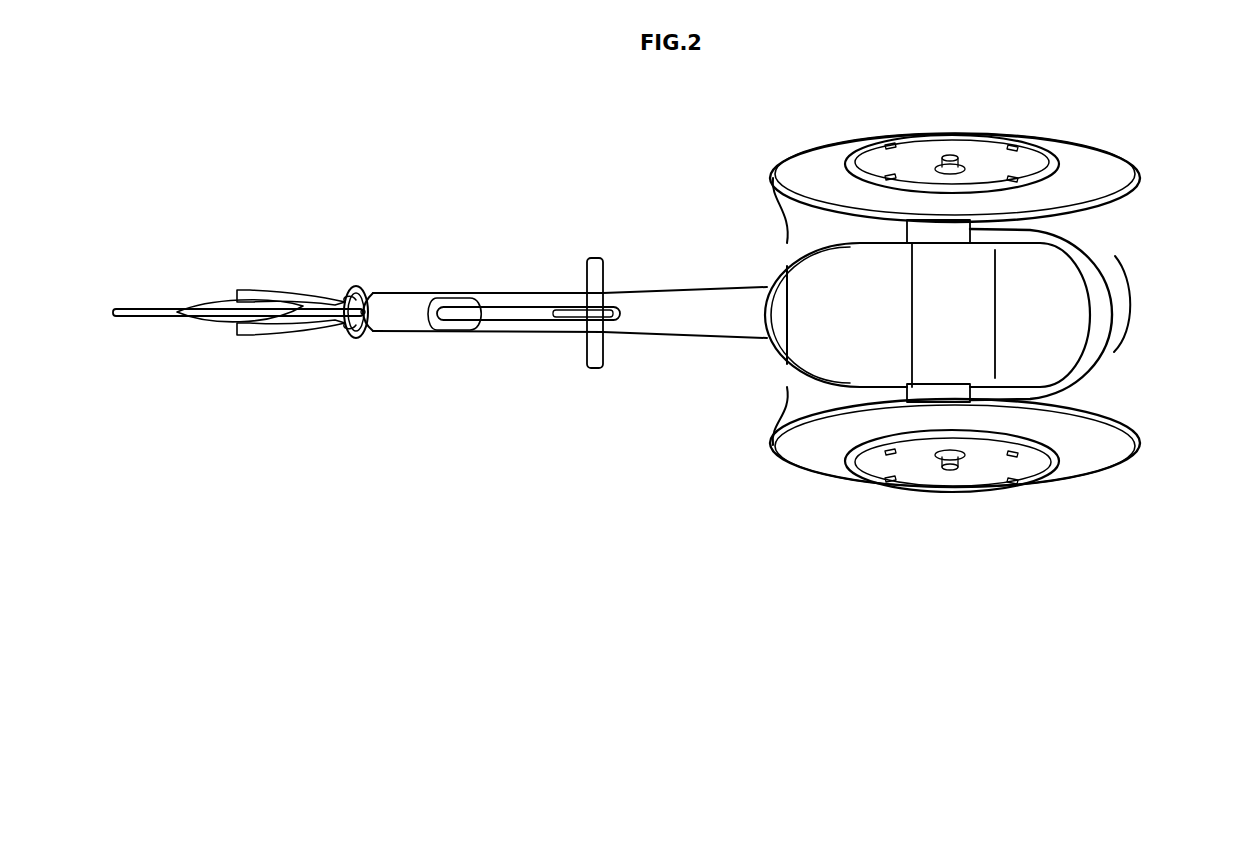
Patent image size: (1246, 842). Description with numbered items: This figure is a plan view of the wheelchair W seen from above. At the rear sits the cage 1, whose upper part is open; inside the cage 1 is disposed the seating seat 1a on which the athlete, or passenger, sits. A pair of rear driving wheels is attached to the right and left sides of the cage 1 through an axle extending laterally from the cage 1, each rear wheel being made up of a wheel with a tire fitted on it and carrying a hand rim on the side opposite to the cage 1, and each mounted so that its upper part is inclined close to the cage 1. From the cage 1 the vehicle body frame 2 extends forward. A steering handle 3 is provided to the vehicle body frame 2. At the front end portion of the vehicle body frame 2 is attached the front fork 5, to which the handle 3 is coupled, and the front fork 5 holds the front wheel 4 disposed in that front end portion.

The cage 1 is at (974, 311).
The seating seat 1a is at (1068, 282).
The vehicle body frame 2 is at (705, 297).
The steering handle 3 is at (595, 262).
The front wheel 4 is at (150, 307).
The front fork 5 is at (282, 290).
The wheelchair W is at (1166, 159).